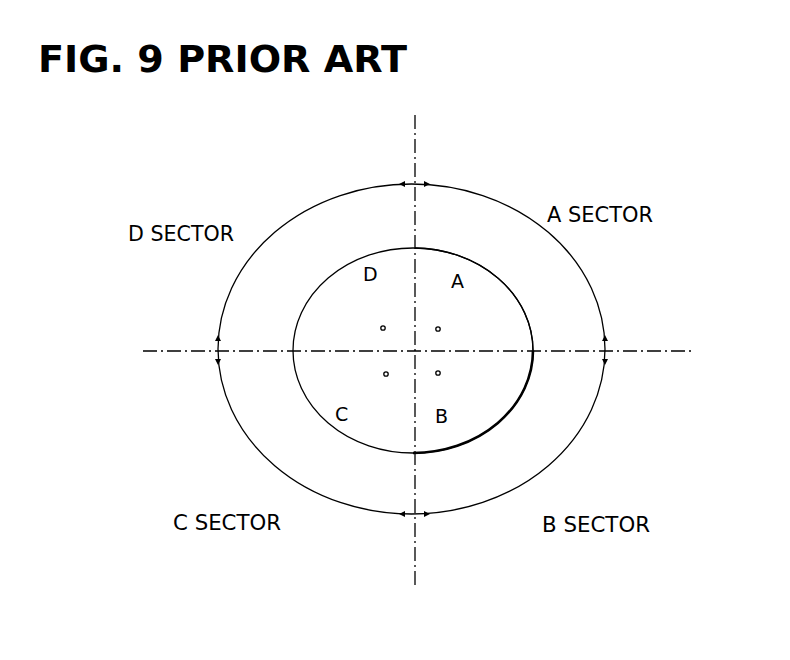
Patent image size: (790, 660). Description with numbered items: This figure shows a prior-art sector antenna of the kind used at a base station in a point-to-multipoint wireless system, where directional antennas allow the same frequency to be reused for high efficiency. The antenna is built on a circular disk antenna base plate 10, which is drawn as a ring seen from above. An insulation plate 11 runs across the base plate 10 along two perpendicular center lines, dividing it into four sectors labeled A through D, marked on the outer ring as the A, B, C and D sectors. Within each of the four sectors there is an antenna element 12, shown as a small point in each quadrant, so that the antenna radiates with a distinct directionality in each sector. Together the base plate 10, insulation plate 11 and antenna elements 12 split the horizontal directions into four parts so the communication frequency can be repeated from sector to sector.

The circular disk antenna base plate 10 is at (468, 447).
The insulation plate 11 is at (418, 252).
The antenna element 12 is at (382, 328).